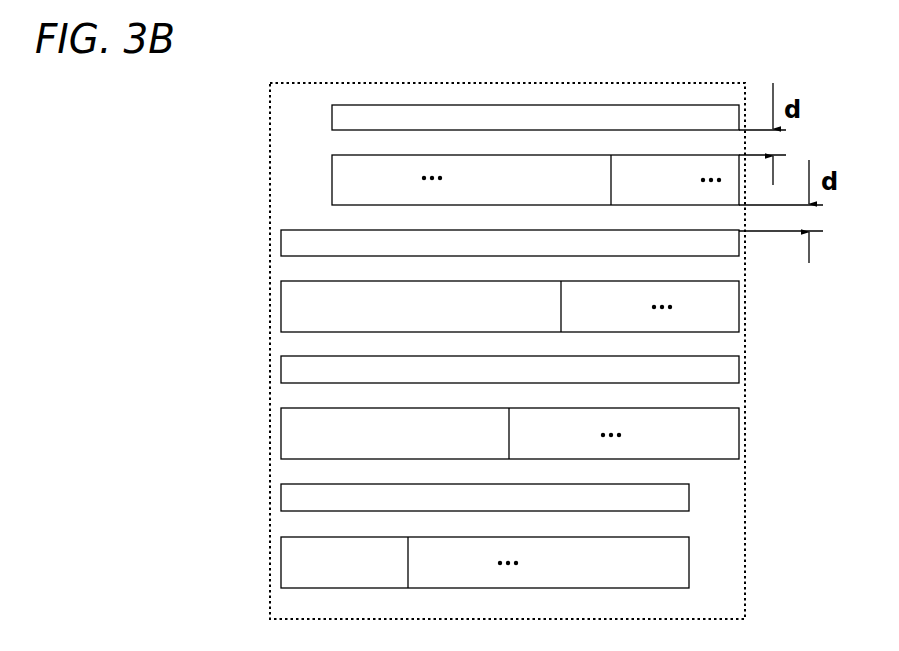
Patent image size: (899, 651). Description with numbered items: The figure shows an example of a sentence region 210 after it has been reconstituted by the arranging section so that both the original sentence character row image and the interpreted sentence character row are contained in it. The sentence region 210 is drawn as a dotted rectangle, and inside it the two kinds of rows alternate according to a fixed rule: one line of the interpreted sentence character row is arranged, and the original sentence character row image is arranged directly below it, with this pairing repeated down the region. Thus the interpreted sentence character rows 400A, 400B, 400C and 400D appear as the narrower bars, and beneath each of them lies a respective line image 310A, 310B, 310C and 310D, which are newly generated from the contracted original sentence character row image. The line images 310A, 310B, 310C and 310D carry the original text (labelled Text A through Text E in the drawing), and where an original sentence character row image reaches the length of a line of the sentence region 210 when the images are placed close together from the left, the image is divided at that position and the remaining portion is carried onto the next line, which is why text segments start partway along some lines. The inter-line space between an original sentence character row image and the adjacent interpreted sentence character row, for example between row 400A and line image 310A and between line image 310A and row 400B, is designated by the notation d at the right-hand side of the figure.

The sentence region 210 is at (508, 83).
The interpreted sentence character row 400A is at (332, 111).
The line image 310A is at (332, 173).
The interpreted sentence character row 400B is at (281, 240).
The line image 310B is at (281, 306).
The interpreted sentence character row 400C is at (281, 376).
The line image 310C is at (281, 436).
The interpreted sentence character row 400D is at (281, 503).
The line image 310D is at (281, 569).